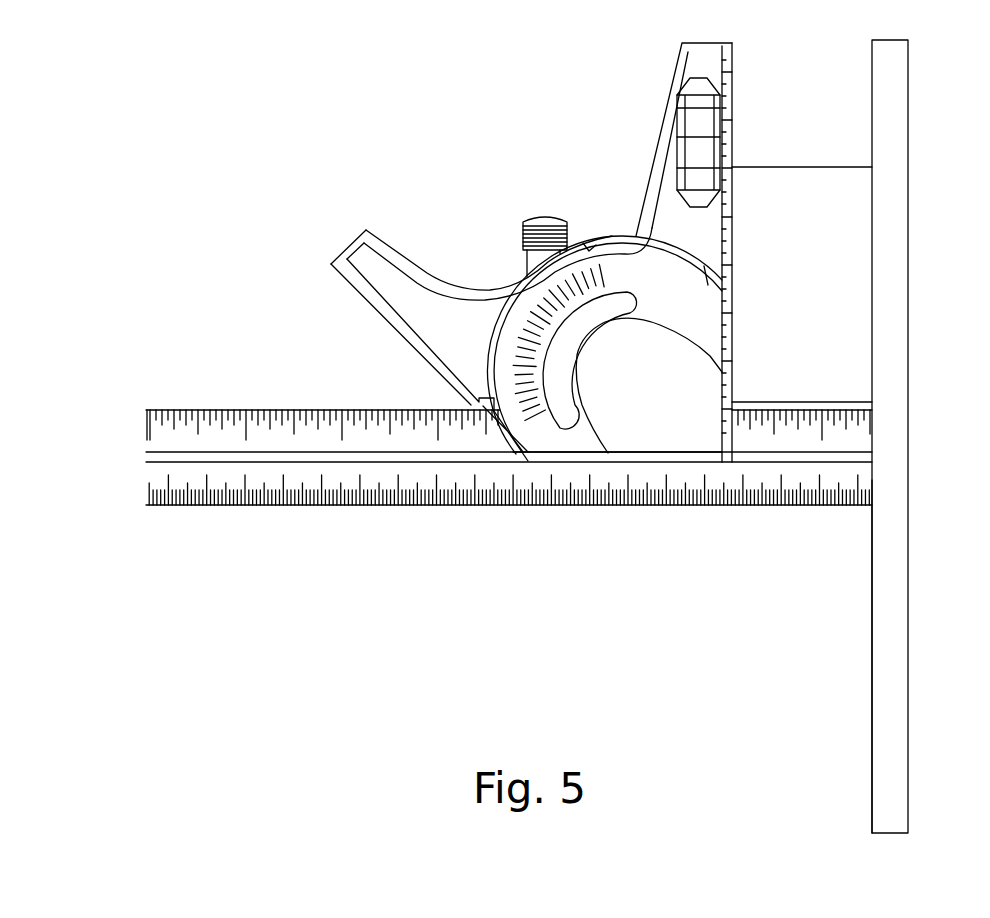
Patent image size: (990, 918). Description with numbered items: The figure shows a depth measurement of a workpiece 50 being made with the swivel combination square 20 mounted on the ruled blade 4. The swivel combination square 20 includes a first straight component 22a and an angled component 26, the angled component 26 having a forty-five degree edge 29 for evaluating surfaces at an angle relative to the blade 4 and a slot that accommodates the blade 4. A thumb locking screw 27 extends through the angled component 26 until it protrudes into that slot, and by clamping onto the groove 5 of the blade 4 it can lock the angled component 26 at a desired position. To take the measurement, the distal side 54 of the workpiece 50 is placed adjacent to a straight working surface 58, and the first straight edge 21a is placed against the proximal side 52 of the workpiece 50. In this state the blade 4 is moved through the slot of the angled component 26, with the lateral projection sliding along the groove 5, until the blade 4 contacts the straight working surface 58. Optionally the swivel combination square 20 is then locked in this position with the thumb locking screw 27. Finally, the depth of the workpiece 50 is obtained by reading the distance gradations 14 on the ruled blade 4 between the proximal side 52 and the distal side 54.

The ruled blade 4 is at (293, 508).
The groove 5 is at (148, 457).
The distance gradations 14 is at (197, 412).
The swivel combination square 20 is at (358, 168).
The first straight edge 21a is at (733, 88).
The first straight component 22a is at (670, 180).
The angled component 26 is at (413, 297).
The thumb locking screw 27 is at (538, 213).
The angled 45 degrees edge 29 is at (380, 316).
The workpiece 50 is at (817, 195).
The proximal side 52 is at (733, 184).
The distal side 54 is at (872, 328).
The straight working surface 58 is at (872, 652).